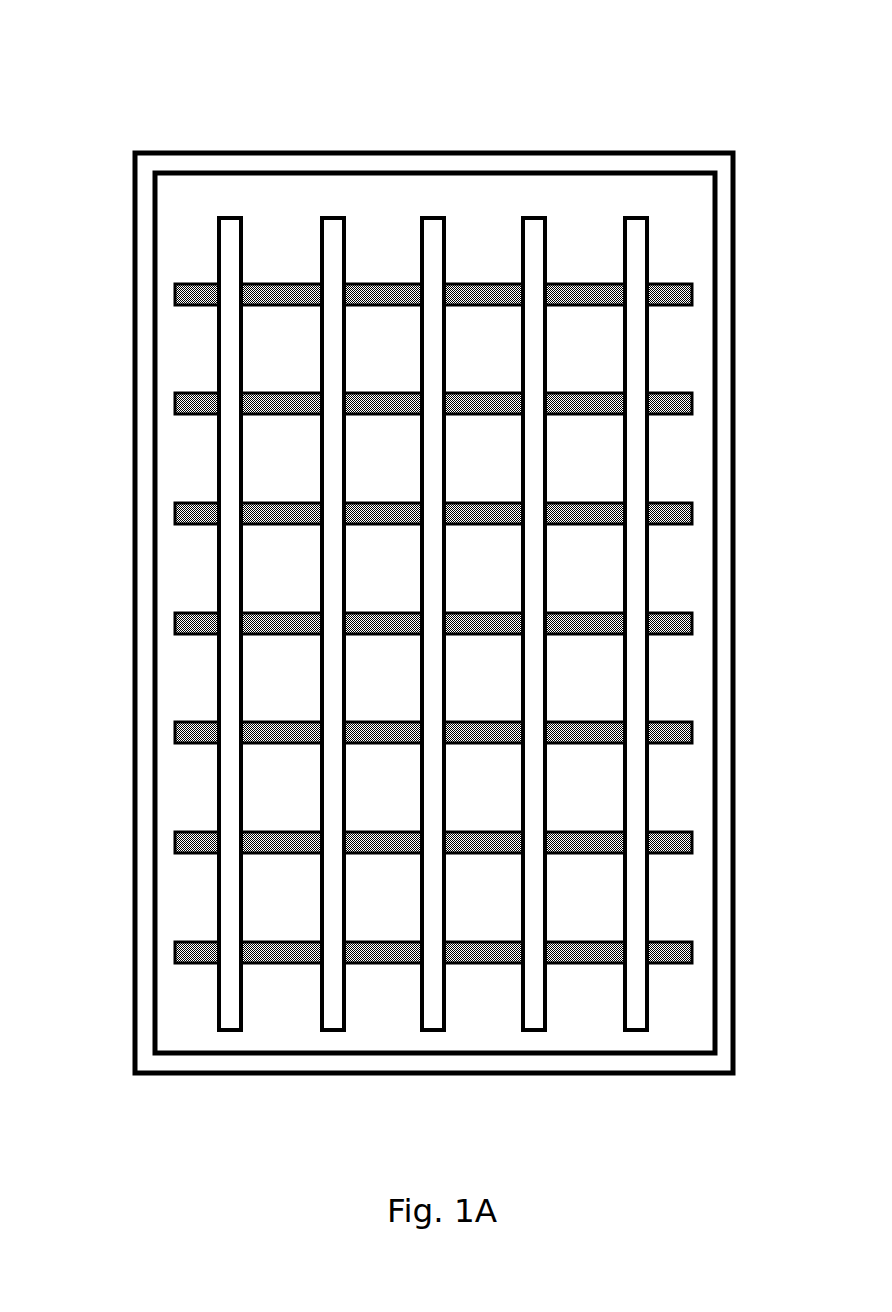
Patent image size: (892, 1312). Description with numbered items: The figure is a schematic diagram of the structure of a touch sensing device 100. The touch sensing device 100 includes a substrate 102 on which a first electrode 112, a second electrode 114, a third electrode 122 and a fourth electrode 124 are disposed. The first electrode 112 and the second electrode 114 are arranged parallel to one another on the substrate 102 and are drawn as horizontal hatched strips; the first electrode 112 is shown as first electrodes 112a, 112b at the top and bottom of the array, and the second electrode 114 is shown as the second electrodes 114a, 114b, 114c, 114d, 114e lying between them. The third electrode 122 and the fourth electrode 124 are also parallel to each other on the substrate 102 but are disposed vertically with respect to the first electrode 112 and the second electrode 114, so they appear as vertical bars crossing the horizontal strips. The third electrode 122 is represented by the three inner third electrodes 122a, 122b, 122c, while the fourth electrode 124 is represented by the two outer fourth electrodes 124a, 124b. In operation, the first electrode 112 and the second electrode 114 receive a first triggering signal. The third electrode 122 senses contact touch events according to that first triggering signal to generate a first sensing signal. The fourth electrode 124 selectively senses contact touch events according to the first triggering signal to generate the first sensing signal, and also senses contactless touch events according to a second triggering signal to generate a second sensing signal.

The touch sensing device 100 is at (130, 36).
The substrate 102 is at (148, 195).
The first electrode 112 is at (68, 951).
The first electrode 112a is at (175, 300).
The first electrode 112b is at (175, 958).
The second electrode 114 is at (803, 406).
The second electrode 114a is at (692, 398).
The second electrode 114b is at (692, 508).
The second electrode 114c is at (692, 618).
The second electrode 114d is at (692, 727).
The second electrode 114e is at (692, 837).
The third electrode 122 is at (535, 103).
The third electrode 122a is at (326, 218).
The third electrode 122b is at (425, 218).
The third electrode 122c is at (527, 218).
The fourth electrode 124 is at (635, 1114).
The fourth electrode 124a is at (236, 1031).
The fourth electrode 124b is at (640, 1031).